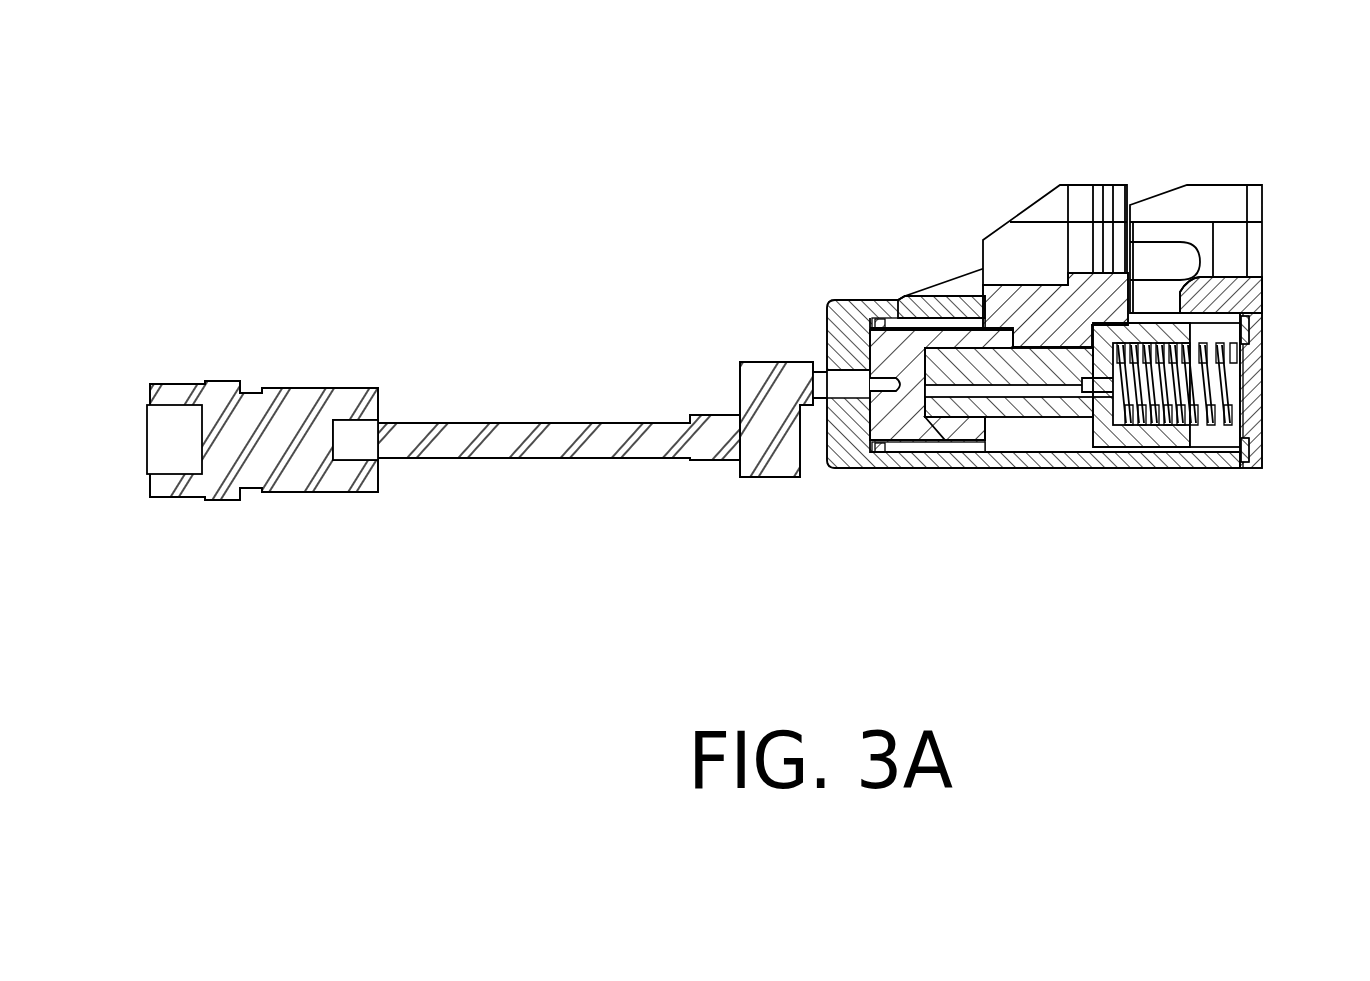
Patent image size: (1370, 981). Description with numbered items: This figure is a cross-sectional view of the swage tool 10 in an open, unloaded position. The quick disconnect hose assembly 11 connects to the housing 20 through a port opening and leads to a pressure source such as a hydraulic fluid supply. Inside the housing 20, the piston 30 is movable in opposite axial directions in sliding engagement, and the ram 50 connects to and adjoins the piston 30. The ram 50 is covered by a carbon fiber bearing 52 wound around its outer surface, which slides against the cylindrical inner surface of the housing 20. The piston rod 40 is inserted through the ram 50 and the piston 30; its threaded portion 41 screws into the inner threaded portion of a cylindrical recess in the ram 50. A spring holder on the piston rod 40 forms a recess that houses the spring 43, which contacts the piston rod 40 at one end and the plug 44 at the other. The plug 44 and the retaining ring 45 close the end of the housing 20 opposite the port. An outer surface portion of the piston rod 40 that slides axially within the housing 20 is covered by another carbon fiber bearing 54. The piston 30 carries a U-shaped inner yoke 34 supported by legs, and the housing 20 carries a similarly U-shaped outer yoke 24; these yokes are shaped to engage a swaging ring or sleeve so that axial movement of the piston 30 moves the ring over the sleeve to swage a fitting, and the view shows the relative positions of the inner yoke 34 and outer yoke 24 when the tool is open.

The swage tool 10 is at (1050, 307).
The quick disconnect hose assembly 11 is at (530, 412).
The housing 20 is at (815, 308).
The outer yoke 24 is at (1241, 163).
The piston 30 is at (1035, 303).
The inner yoke 34 is at (1098, 163).
The piston rod 40 is at (1028, 402).
The threaded portion 41 is at (948, 422).
The spring 43 is at (1218, 434).
The plug 44 is at (1266, 376).
The retaining ring 45 is at (1258, 324).
The ram 50 is at (907, 434).
The carbon fiber bearing 52 is at (919, 303).
The carbon fiber bearing 54 is at (1155, 454).